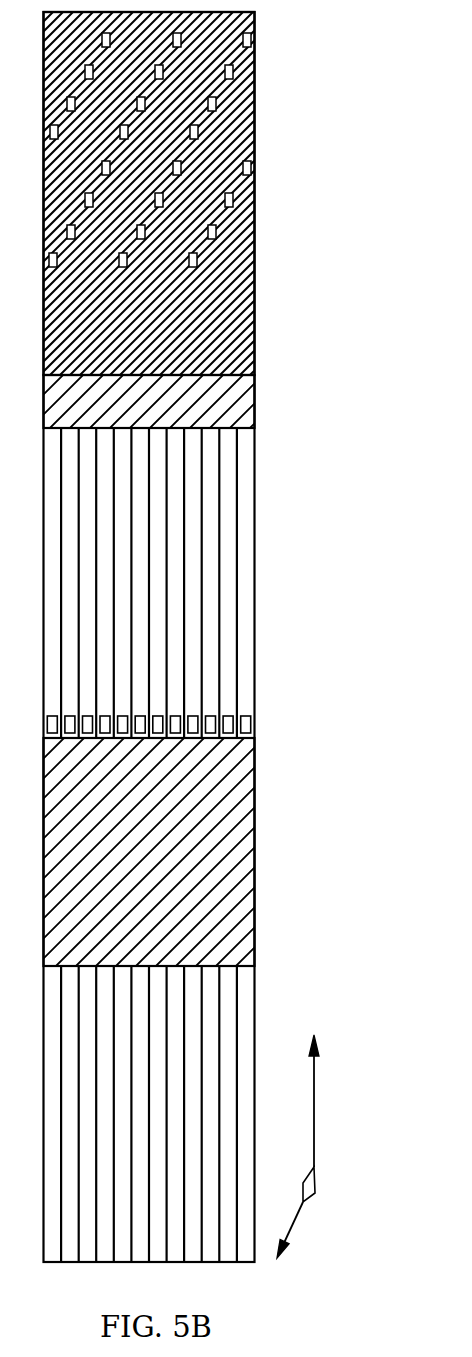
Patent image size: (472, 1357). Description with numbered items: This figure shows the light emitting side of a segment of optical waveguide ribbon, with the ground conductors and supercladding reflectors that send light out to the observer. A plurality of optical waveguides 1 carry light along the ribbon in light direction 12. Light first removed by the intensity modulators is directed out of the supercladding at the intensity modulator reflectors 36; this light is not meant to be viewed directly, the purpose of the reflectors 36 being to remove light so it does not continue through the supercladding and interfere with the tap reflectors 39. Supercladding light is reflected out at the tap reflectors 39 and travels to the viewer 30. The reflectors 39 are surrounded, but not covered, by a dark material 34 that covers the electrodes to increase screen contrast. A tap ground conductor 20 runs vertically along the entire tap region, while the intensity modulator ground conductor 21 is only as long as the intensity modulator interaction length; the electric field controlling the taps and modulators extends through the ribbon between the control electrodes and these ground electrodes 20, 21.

The optical waveguides 1 is at (228, 502).
The light direction 12 is at (322, 1112).
The tap ground conductor 20 is at (190, 400).
The intensity modulator ground conductor 21 is at (185, 824).
The viewer 30 is at (300, 1232).
The dark material 34 is at (197, 337).
The intensity modulator reflectors 36 is at (227, 705).
The tap reflectors 39 is at (252, 40).